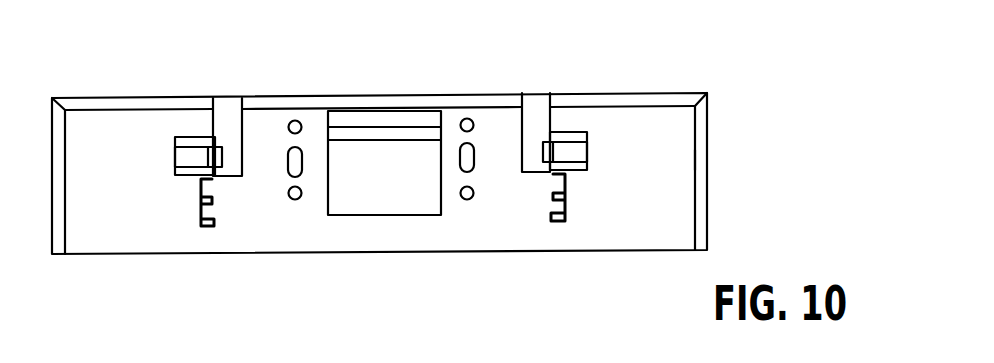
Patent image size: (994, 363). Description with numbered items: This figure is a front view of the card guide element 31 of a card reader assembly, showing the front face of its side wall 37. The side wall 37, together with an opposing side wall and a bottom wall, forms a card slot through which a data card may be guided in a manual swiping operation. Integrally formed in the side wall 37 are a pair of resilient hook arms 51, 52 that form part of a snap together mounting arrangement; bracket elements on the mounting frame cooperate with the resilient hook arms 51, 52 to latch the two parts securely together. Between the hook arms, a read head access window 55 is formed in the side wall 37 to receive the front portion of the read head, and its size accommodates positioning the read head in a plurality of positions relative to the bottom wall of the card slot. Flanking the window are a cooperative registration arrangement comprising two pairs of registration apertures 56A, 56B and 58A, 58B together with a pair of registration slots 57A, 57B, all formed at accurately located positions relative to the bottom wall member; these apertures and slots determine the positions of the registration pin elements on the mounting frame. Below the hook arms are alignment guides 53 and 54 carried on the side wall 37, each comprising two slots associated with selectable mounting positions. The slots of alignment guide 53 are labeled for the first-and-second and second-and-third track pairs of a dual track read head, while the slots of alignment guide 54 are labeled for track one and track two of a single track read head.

The card guide element 31 is at (690, 85).
The side wall 37 is at (685, 160).
The resilient hook arm 51 is at (207, 147).
The resilient hook arm 52 is at (563, 147).
The alignment guide 53 is at (217, 203).
The alignment guide 54 is at (550, 218).
The read head access window 55 is at (440, 198).
The registration aperture 56A is at (295, 120).
The registration slot 57A is at (292, 158).
The registration aperture 58A is at (298, 199).
The registration aperture 56B is at (466, 118).
The registration slot 57B is at (472, 147).
The registration aperture 58B is at (470, 199).